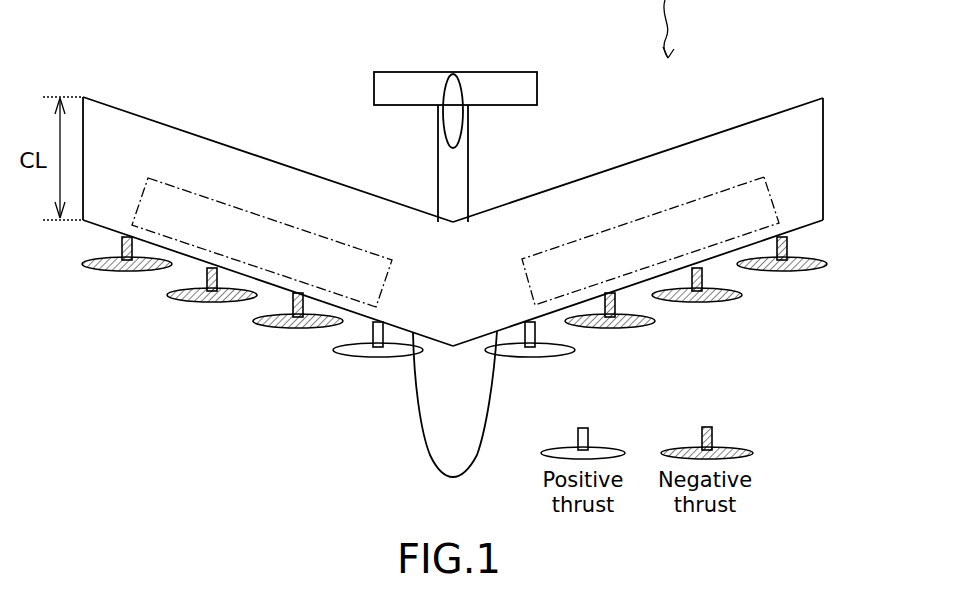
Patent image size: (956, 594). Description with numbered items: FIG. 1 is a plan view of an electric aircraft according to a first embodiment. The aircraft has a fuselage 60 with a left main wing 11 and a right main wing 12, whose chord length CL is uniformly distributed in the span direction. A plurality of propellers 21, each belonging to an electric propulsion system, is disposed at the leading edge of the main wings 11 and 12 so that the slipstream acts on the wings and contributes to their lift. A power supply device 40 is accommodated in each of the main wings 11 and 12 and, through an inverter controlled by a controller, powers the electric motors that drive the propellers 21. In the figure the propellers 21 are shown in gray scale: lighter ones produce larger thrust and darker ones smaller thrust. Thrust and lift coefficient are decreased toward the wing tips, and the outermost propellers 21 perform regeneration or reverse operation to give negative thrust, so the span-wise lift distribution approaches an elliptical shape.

The left main wing 11 is at (153, 130).
The right main wing 12 is at (748, 130).
The propeller 21 is at (107, 272).
The power supply device 40 is at (225, 215).
The fuselage 60 is at (425, 392).